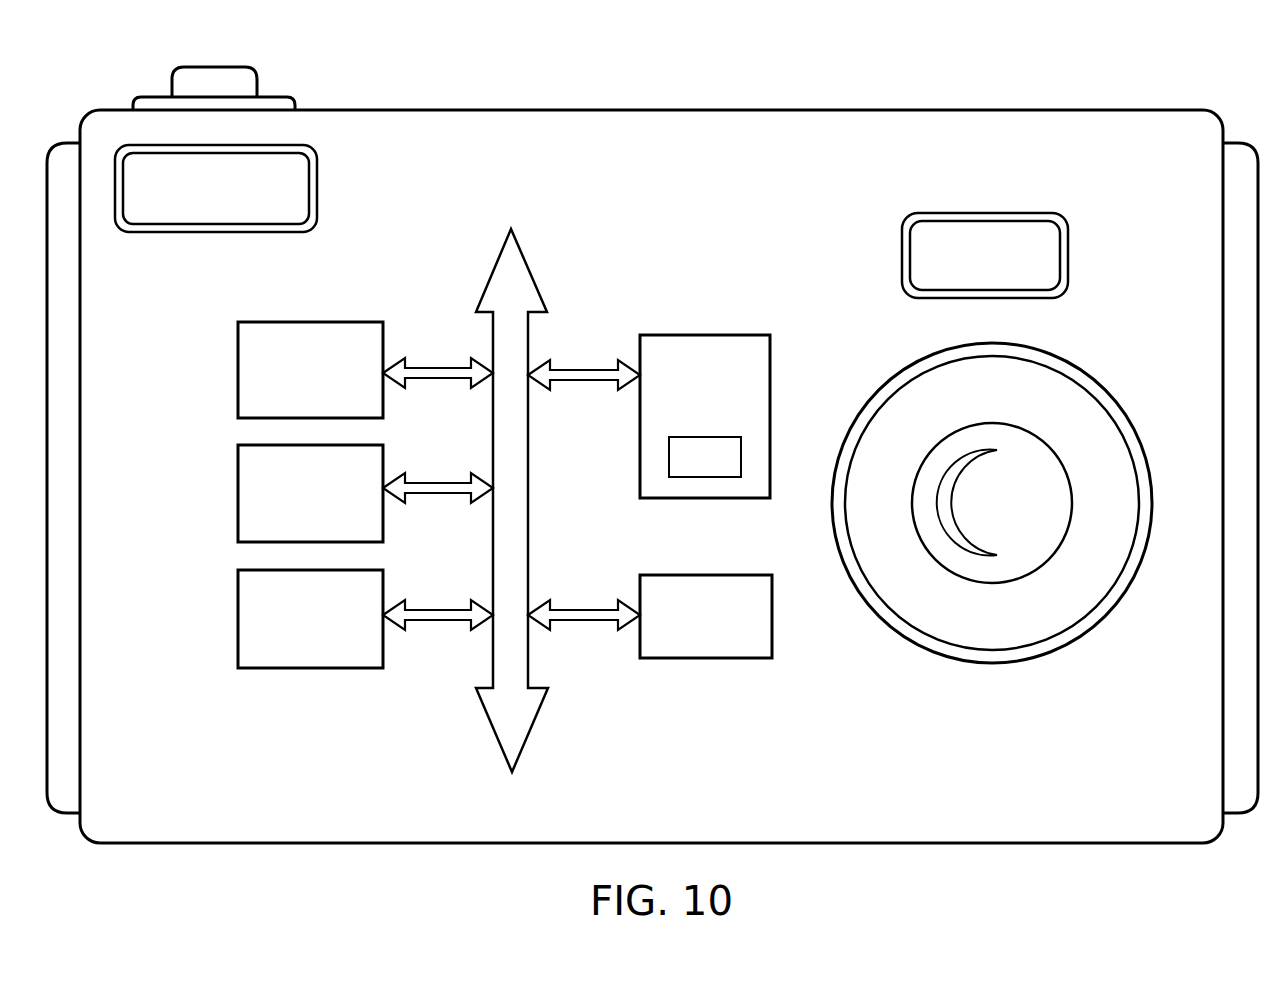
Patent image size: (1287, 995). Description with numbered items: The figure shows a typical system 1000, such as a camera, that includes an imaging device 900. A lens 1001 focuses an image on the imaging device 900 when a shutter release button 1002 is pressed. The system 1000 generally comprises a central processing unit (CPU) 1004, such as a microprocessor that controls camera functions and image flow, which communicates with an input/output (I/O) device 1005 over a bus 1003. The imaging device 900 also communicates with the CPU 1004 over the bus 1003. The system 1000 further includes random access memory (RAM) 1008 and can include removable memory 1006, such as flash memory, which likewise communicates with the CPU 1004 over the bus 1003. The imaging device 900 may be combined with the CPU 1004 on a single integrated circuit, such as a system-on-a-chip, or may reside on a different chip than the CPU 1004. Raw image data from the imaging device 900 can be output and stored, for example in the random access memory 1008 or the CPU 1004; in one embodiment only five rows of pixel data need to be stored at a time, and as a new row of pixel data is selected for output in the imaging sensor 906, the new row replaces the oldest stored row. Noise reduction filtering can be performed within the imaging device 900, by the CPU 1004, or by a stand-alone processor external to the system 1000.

The system 1000 is at (392, 101).
The lens 1001 is at (1013, 447).
The shutter release button 1002 is at (257, 73).
The bus 1003 is at (488, 725).
The central processing unit (CPU) 1004 is at (238, 382).
The input/output (I/O) device 1005 is at (238, 505).
The removable memory 1006 is at (238, 618).
The random access memory (RAM) 1008 is at (772, 609).
The imaging device 900 is at (679, 440).
The imaging sensor 906 is at (727, 478).